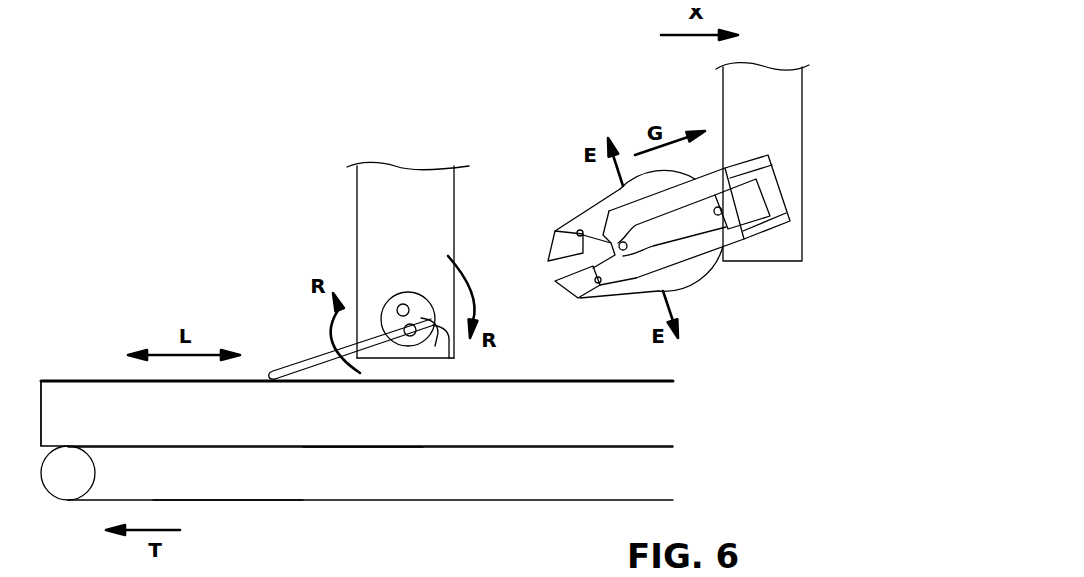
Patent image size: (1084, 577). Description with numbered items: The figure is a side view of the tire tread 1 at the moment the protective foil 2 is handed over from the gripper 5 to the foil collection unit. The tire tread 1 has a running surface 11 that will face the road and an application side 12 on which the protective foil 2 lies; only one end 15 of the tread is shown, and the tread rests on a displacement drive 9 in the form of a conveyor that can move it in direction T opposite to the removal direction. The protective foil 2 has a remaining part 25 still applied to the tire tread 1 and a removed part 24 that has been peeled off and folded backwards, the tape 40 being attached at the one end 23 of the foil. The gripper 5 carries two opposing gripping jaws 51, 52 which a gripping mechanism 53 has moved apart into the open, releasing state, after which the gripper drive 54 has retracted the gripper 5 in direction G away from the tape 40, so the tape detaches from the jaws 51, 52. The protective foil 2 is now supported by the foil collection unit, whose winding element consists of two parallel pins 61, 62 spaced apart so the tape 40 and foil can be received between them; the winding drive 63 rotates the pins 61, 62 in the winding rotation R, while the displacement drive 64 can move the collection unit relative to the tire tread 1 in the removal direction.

The tire tread 1 is at (247, 428).
The protective foil 2 is at (438, 381).
The gripper 5 is at (649, 274).
The displacement drive 9 is at (225, 483).
The running surface 11 is at (348, 447).
The application side 12 is at (110, 378).
The end 15 is at (38, 410).
The end 23 is at (451, 355).
The removed part 24 is at (305, 350).
The remaining part 25 is at (537, 376).
The tape 40 is at (430, 342).
The gripping jaw 51 is at (562, 282).
The gripping jaw 52 is at (553, 248).
The gripping mechanism 53 is at (750, 208).
The gripper drive 54 is at (733, 95).
The pin 61 is at (400, 301).
The pin 62 is at (397, 334).
The winding drive 63 is at (417, 298).
The displacement drive 64 is at (362, 195).